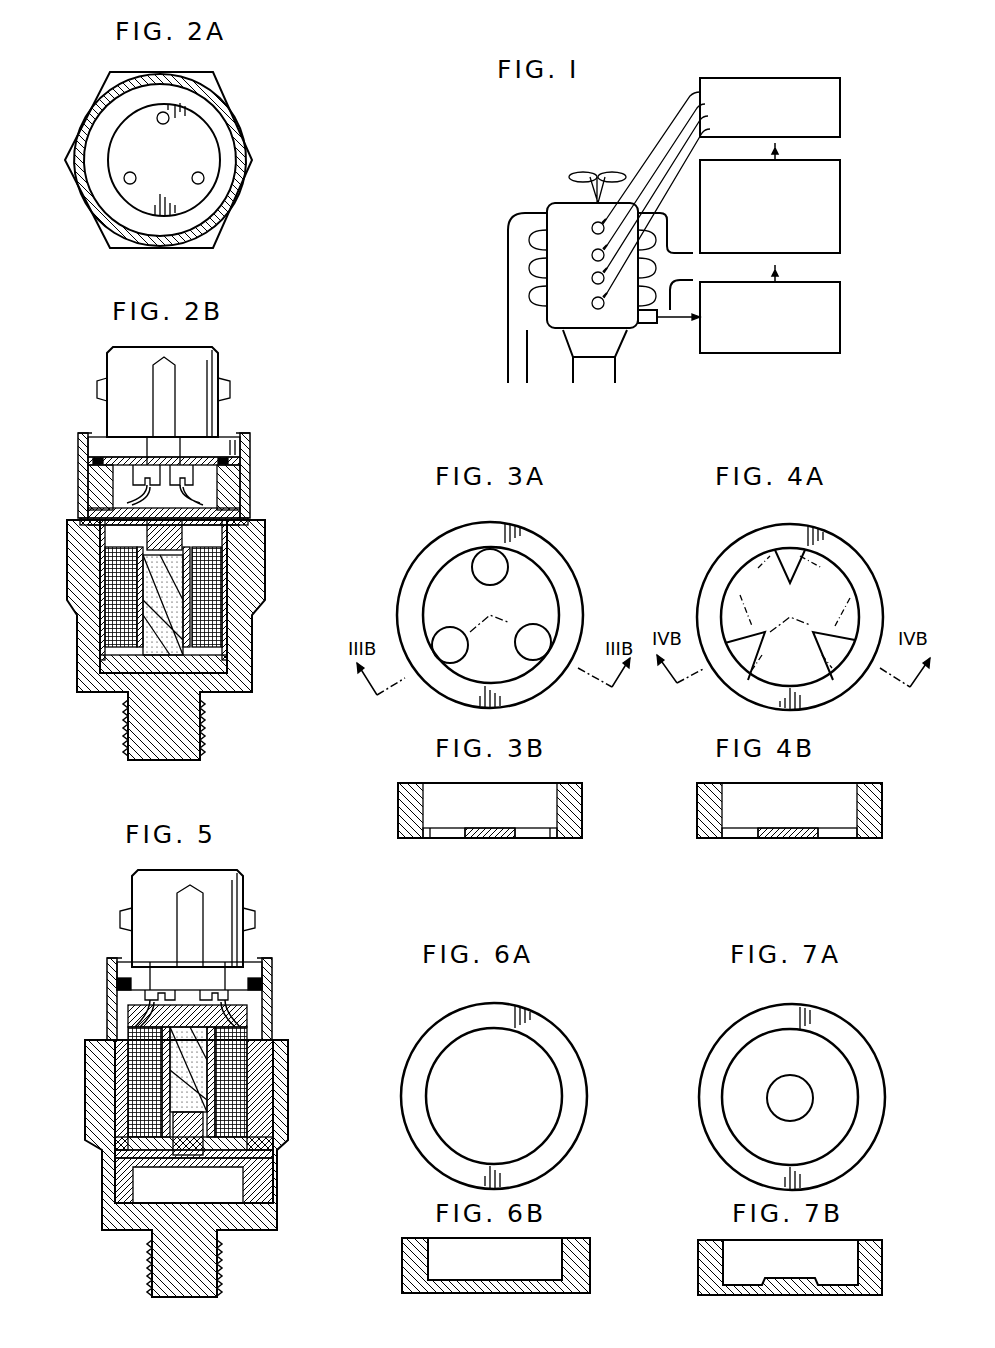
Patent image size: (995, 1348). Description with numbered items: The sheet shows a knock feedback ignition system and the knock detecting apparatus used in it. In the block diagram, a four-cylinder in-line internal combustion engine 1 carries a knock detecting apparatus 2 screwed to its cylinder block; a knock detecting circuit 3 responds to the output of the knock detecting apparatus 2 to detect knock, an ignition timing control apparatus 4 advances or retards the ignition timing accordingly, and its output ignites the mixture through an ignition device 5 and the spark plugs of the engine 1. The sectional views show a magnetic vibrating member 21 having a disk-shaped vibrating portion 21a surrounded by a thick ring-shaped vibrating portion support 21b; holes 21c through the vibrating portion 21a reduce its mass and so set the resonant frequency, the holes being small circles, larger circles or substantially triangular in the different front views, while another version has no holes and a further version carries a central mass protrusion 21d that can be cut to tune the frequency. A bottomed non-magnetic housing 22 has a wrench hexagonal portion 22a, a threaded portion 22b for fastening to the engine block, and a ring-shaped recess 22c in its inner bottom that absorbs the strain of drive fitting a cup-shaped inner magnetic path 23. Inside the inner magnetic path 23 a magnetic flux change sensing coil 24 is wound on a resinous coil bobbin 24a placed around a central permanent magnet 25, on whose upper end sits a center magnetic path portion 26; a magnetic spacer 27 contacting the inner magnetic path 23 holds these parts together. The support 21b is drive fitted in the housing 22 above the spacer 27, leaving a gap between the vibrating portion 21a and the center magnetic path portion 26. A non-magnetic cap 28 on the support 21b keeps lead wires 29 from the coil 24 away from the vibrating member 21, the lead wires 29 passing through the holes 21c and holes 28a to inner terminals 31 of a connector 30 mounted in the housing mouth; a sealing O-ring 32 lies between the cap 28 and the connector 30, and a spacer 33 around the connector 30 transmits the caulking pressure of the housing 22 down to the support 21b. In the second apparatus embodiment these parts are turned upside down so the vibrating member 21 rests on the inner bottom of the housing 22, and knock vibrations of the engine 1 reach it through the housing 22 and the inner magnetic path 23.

In FIG. 1, the internal combustion engine 1 is at (632, 336).
In FIG. 1, the knock detecting apparatus 2 is at (655, 328).
In FIG. 1, the knock detecting circuit 3 is at (842, 317).
In FIG. 1, the ignition timing control apparatus 4 is at (842, 214).
In FIG. 1, the ignition device 5 is at (842, 102).
In FIG. 2A, the vibrating member 21 is at (220, 170).
In FIG. 2B, the vibrating member 21 is at (90, 513).
In FIG. 5, the vibrating member 21 is at (120, 1185).
In FIG. 3A, the vibrating member 21 is at (583, 597).
In FIG. 4A, the vibrating member 21 is at (883, 609).
In FIG. 3B, the vibrating member 21 is at (582, 833).
In FIG. 4B, the vibrating member 21 is at (882, 809).
In FIG. 6A, the vibrating member 21 is at (588, 1074).
In FIG. 7A, the vibrating member 21 is at (885, 1064).
In FIG. 6B, the vibrating member 21 is at (590, 1280).
In FIG. 7B, the vibrating member 21 is at (698, 1276).
In FIG. 2A, the vibrating portion 21a is at (207, 148).
In FIG. 2B, the vibrating portion 21a is at (205, 528).
In FIG. 5, the vibrating portion 21a is at (218, 1170).
In FIG. 3A, the vibrating portion 21a is at (541, 592).
In FIG. 4A, the vibrating portion 21a is at (800, 677).
In FIG. 3B, the vibrating portion 21a is at (470, 838).
In FIG. 4B, the vibrating portion 21a is at (764, 838).
In FIG. 6A, the vibrating portion 21a is at (530, 1140).
In FIG. 7A, the vibrating portion 21a is at (838, 1118).
In FIG. 6B, the vibrating portion 21a is at (528, 1293).
In FIG. 7B, the vibrating portion 21a is at (849, 1295).
In FIG. 2A, the vibrating portion support 21b is at (222, 207).
In FIG. 2B, the vibrating portion support 21b is at (240, 490).
In FIG. 5, the vibrating portion support 21b is at (253, 1210).
In FIG. 3A, the vibrating portion support 21b is at (548, 678).
In FIG. 4A, the vibrating portion support 21b is at (860, 586).
In FIG. 3B, the vibrating portion support 21b is at (580, 792).
In FIG. 4B, the vibrating portion support 21b is at (878, 833).
In FIG. 6A, the vibrating portion support 21b is at (557, 1045).
In FIG. 7A, the vibrating portion support 21b is at (842, 1045).
In FIG. 6B, the vibrating portion support 21b is at (580, 1254).
In FIG. 7B, the vibrating portion support 21b is at (882, 1251).
In FIG. 2A, the holes 21c is at (130, 180).
In FIG. 3A, the holes 21c is at (491, 550).
In FIG. 4A, the holes 21c is at (793, 561).
In FIG. 3B, the holes 21c is at (535, 838).
In FIG. 4B, the holes 21c is at (835, 838).
In FIG. 7A, the mass protrusion 21d is at (767, 1086).
In FIG. 7B, the mass protrusion 21d is at (780, 1287).
In FIG. 2A, the housing 22 is at (220, 97).
In FIG. 2B, the housing 22 is at (250, 656).
In FIG. 5, the housing 22 is at (275, 1190).
In FIG. 2B, the wrench hexagonal portion 22a is at (262, 580).
In FIG. 5, the wrench hexagonal portion 22a is at (283, 1090).
In FIG. 2B, the threaded portion 22b is at (200, 724).
In FIG. 5, the threaded portion 22b is at (210, 1283).
In FIG. 2B, the ring-shaped recess 22c is at (243, 690).
In FIG. 2B, the inner magnetic path 23 is at (232, 637).
In FIG. 5, the inner magnetic path 23 is at (260, 1083).
In FIG. 2B, the magnetic flux change sensing coil 24 is at (210, 612).
In FIG. 5, the magnetic flux change sensing coil 24 is at (235, 1050).
In FIG. 2B, the coil bobbin 24a is at (100, 650).
In FIG. 5, the coil bobbin 24a is at (125, 1140).
In FIG. 2B, the permanent magnet 25 is at (117, 595).
In FIG. 5, the permanent magnet 25 is at (145, 1079).
In FIG. 2B, the center magnetic path portion 26 is at (150, 560).
In FIG. 5, the center magnetic path portion 26 is at (200, 1115).
In FIG. 2B, the spacer 27 is at (210, 523).
In FIG. 5, the spacer 27 is at (270, 1158).
In FIG. 2B, the cap 28 is at (85, 478).
In FIG. 5, the cap 28 is at (189, 999).
In FIG. 2B, the holes in the cap 28a is at (240, 515).
In FIG. 2B, the lead wires 29 is at (120, 499).
In FIG. 5, the lead wires 29 is at (240, 1003).
In FIG. 2B, the connector 30 is at (213, 375).
In FIG. 5, the connector 30 is at (240, 899).
In FIG. 2B, the inner terminals 31 is at (190, 482).
In FIG. 5, the inner terminals 31 is at (205, 990).
In FIG. 2B, the sealing O-ring 32 is at (232, 460).
In FIG. 5, the sealing O-ring 32 is at (118, 990).
In FIG. 2B, the spacer 33 is at (225, 467).